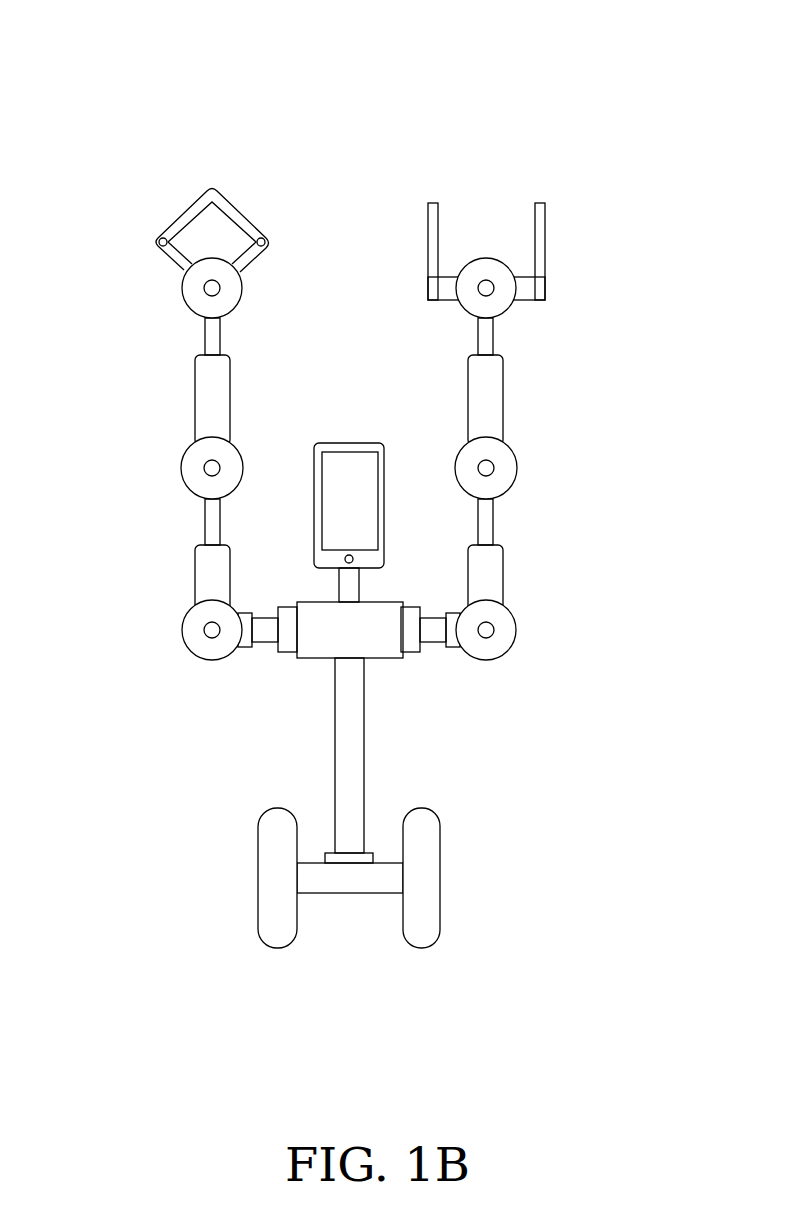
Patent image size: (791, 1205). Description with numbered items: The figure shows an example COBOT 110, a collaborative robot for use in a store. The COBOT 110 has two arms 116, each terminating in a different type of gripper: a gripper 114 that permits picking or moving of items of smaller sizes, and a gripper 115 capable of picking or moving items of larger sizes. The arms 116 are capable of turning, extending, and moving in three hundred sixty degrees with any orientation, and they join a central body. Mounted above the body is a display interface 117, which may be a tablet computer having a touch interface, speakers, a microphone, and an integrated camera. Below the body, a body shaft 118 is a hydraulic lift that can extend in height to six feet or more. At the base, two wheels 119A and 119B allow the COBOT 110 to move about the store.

The COBOT 110 is at (641, 82).
The gripper 114 is at (160, 242).
The gripper 115 is at (545, 240).
The arms 116 is at (204, 524).
The display interface 117 is at (350, 517).
The body shaft 118 is at (365, 755).
The wheel 119A is at (258, 878).
The wheel 119B is at (440, 878).